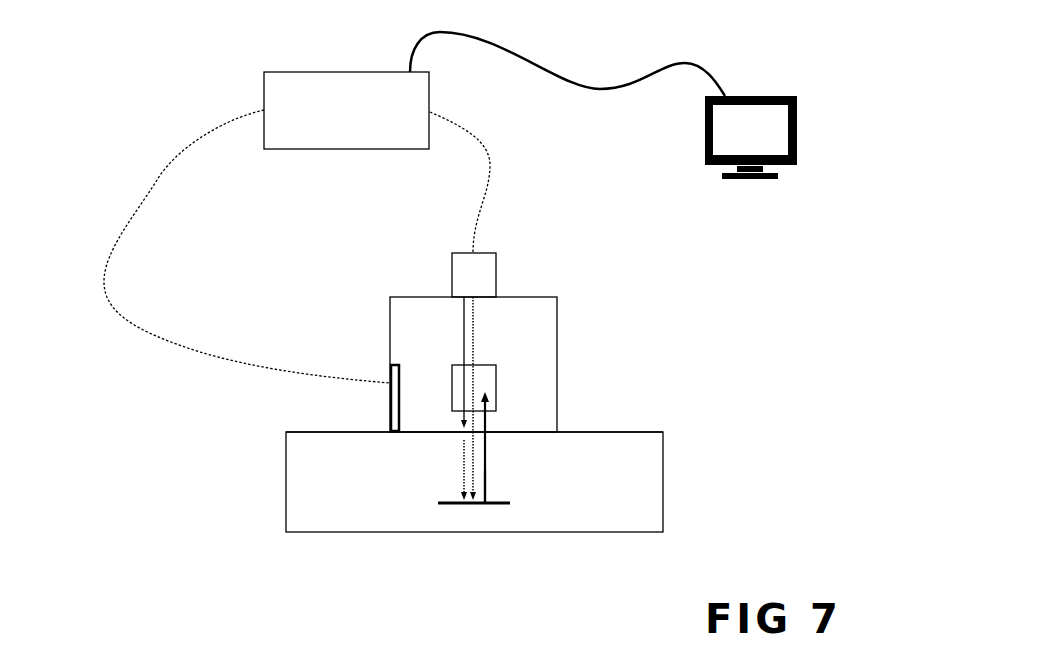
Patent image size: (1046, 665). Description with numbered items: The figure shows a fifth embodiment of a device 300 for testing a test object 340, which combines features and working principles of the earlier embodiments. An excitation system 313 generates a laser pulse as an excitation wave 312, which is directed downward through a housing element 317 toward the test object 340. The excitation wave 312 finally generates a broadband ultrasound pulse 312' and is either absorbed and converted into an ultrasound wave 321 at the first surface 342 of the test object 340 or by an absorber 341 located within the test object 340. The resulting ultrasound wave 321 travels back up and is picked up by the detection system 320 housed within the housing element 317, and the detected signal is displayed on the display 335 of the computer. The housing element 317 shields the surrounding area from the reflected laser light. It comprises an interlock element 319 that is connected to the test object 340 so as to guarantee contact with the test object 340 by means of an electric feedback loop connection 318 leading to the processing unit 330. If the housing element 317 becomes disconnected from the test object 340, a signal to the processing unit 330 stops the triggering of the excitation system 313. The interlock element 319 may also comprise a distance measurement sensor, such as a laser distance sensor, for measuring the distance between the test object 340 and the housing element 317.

The device 300 is at (167, 98).
The processing unit 330 is at (430, 103).
The display 335 is at (705, 150).
The feedback loop connection 318 is at (143, 210).
The excitation system 313 is at (452, 277).
The housing element 317 is at (557, 402).
The detection system 320 is at (496, 392).
The excitation wave 312 is at (370, 379).
The interlock element 319 is at (391, 400).
The test object 340 is at (663, 485).
The first surface 342 is at (330, 432).
The absorber 341 is at (510, 503).
The ultrasound wave 321 is at (487, 445).
The broadband ultrasound pulse 312' is at (698, 518).